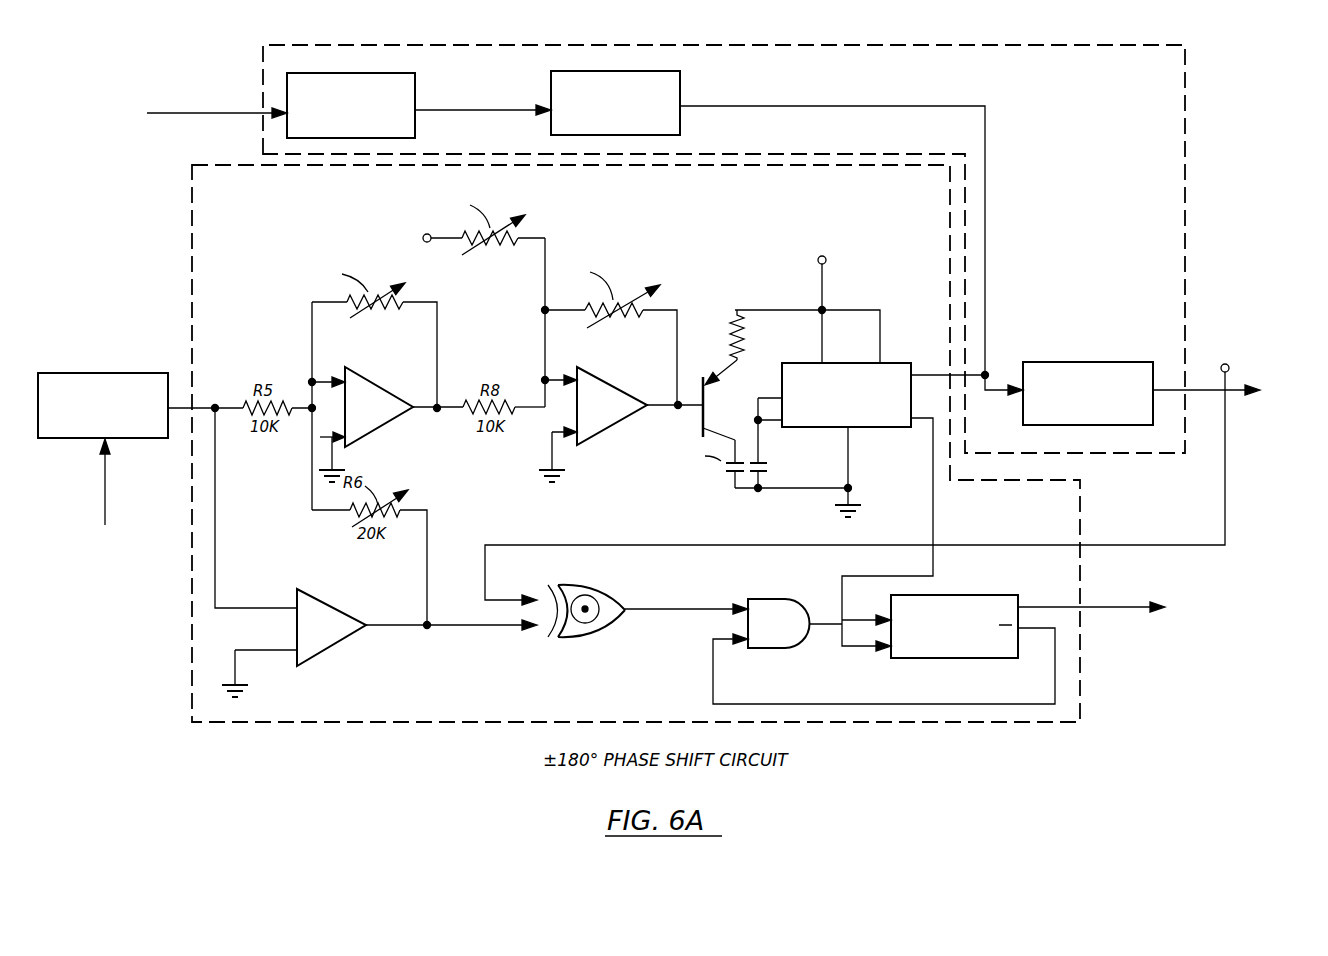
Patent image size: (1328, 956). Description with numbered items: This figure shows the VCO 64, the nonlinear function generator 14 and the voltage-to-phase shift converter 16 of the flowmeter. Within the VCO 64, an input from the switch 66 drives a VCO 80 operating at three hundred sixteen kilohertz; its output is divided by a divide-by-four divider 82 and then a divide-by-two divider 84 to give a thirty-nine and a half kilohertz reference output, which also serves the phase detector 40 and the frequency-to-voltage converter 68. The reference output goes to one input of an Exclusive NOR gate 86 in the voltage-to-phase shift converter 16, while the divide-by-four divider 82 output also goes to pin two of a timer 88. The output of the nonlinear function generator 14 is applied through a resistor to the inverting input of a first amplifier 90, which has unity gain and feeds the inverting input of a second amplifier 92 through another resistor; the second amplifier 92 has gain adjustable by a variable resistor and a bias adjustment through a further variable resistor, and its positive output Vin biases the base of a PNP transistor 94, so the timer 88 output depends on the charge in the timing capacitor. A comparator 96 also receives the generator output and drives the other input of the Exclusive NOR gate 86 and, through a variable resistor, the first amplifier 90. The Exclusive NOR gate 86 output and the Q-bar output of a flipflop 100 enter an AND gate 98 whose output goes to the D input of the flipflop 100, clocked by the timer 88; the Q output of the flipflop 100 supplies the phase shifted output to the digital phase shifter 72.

The nonlinear function generator 14 is at (192, 285).
The voltage-to-phase shift converter 16 is at (988, 705).
The phase detector 40 is at (897, 475).
The voltage-controlled oscillator (VCO) 64 is at (809, 45).
The switch 66 is at (203, 113).
The frequency-to-voltage converter 68 is at (103, 462).
The digital phase shifter 72 is at (1105, 618).
The VCO 80 is at (418, 95).
The divide-by-4 divider 82 is at (683, 92).
The divide-by-2 divider 84 is at (1105, 362).
The Exclusive NOR gate 86 is at (608, 585).
The timer 88 is at (906, 364).
The first amplifier 90 is at (385, 387).
The second amplifier 92 is at (618, 386).
The transistor 94 is at (719, 388).
The comparator 96 is at (338, 607).
The AND gate 98 is at (798, 598).
The flipflop 100 is at (1003, 595).